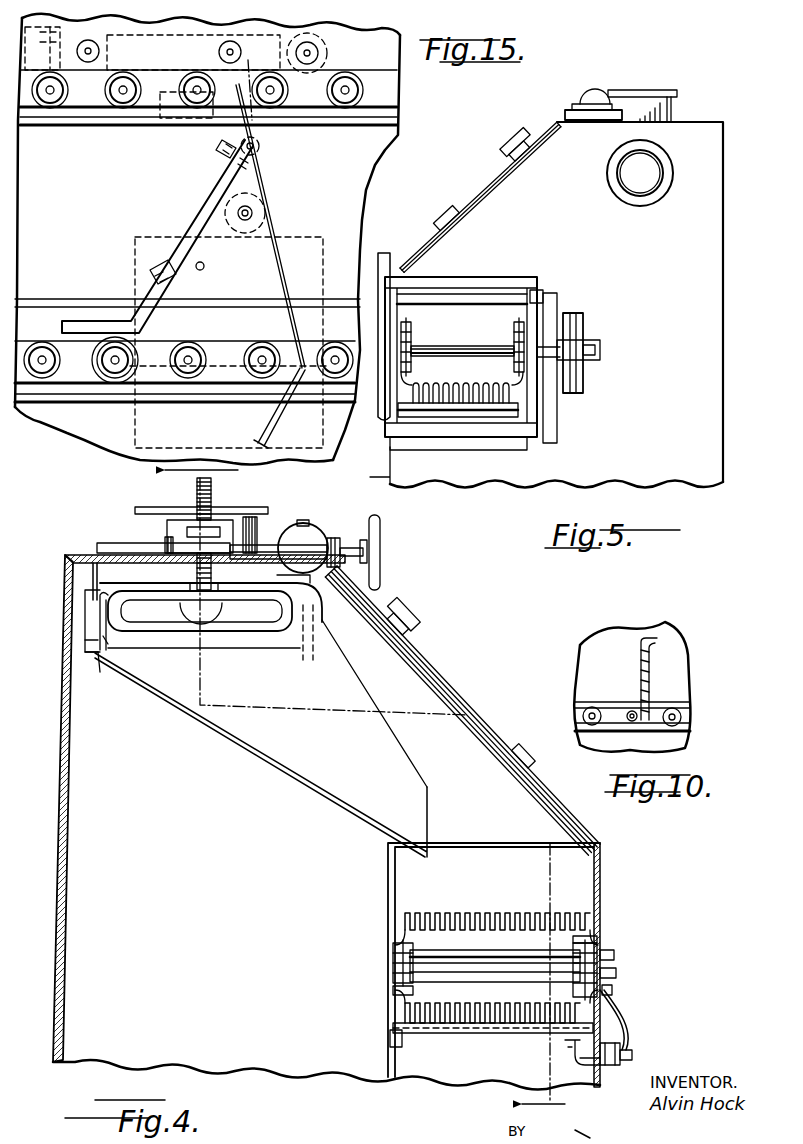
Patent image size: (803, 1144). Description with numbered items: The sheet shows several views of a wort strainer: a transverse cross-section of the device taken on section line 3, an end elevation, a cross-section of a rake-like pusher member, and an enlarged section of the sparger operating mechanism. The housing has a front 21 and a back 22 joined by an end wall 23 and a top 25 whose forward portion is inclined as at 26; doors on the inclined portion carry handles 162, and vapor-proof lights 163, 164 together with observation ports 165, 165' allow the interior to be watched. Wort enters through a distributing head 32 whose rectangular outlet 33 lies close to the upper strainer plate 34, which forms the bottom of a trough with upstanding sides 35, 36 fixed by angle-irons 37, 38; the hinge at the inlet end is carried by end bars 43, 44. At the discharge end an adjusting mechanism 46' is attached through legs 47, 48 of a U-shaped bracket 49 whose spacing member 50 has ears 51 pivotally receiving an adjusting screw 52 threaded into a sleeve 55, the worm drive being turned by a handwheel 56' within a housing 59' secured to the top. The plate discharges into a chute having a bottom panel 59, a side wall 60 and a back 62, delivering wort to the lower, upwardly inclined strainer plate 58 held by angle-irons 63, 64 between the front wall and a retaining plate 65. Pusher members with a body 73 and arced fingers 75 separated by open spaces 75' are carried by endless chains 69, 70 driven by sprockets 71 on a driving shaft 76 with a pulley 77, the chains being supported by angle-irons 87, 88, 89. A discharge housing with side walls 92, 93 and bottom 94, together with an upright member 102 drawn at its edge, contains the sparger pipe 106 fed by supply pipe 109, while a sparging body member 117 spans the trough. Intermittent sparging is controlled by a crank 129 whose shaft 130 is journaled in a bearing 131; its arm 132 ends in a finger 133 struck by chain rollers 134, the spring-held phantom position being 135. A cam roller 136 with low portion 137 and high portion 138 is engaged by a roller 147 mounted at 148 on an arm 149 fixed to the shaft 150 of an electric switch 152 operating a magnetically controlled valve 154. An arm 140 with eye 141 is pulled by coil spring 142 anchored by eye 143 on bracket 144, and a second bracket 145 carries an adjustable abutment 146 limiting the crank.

In FIG. 4, the section line 3- 3 is at (372, 789).
In FIG. 15, the front 21 is at (380, 172).
In FIG. 5, the front 21 is at (372, 465).
In FIG. 4, the front 21 is at (603, 873).
In FIG. 5, the back 22 is at (725, 283).
In FIG. 4, the back 22 is at (57, 812).
In FIG. 5, the end wall 23 is at (652, 266).
In FIG. 5, the top 25 is at (706, 122).
In FIG. 4, the top 25 is at (78, 557).
In FIG. 5, the inclined portion of the top 26 is at (485, 203).
In FIG. 4, the inclined portion of the top 26 is at (470, 695).
In FIG. 4, the distributing head or nozzle 32 is at (193, 578).
In FIG. 4, the rectangular outlet 33 is at (237, 622).
In FIG. 4, the strainer plate 34 is at (180, 649).
In FIG. 4, the side 35 is at (318, 626).
In FIG. 4, the side 36 is at (100, 620).
In FIG. 4, the angle-iron 37 is at (290, 660).
In FIG. 4, the angle-iron 38 is at (100, 657).
In FIG. 4, the end bar 43 is at (312, 584).
In FIG. 4, the end bar 44 is at (92, 572).
In FIG. 4, the adjusting mechanism 46' is at (296, 533).
In FIG. 4, the leg of U-shaped bracket 47 is at (322, 615).
In FIG. 4, the leg of U-shaped bracket 48 is at (85, 643).
In FIG. 4, the U-shaped bracket 49 is at (83, 592).
In FIG. 4, the base or spacing member 50 is at (237, 620).
In FIG. 4, the ears 51 is at (230, 584).
In FIG. 4, the adjusting screw 52 is at (197, 500).
In FIG. 4, the threaded sleeve 55 is at (210, 512).
In FIG. 4, the handwheel 56' is at (390, 552).
In FIG. 4, the strainer plate 58 is at (483, 1032).
In FIG. 4, the bottom panel 59 is at (261, 755).
In FIG. 4, the housing 59' is at (208, 533).
In FIG. 4, the side wall 60 is at (383, 740).
In FIG. 4, the back 62 is at (105, 642).
In FIG. 4, the angle-iron 63 is at (593, 1037).
In FIG. 4, the angle-iron 64 is at (392, 1038).
In FIG. 10, the retaining member or plate 65 is at (690, 675).
In FIG. 4, the retaining member or plate 65 is at (390, 903).
In FIG. 15, the endless chain 69 is at (402, 87).
In FIG. 5, the endless chain 69 is at (410, 328).
In FIG. 4, the endless chain 69 is at (595, 938).
In FIG. 5, the endless chain 70 is at (513, 330).
In FIG. 10, the endless chain 70 is at (688, 718).
In FIG. 4, the endless chain 70 is at (397, 993).
In FIG. 4, the driving sprocket 71 is at (390, 966).
In FIG. 10, the body portion 73 is at (640, 685).
In FIG. 10, the fingers 75 is at (632, 678).
In FIG. 4, the fingers 75 is at (497, 970).
In FIG. 4, the open space portion 75' is at (474, 971).
In FIG. 5, the driving shaft 76 is at (458, 350).
In FIG. 4, the driving shaft 76 is at (470, 967).
In FIG. 5, the pulley 77 is at (583, 328).
In FIG. 15, the supporting angle-iron 87 is at (398, 124).
In FIG. 15, the supporting angle-iron 88 is at (60, 405).
In FIG. 10, the supporting angle-iron 89 is at (693, 740).
In FIG. 5, the side wall 92 is at (388, 405).
In FIG. 5, the side wall 93 is at (542, 296).
In FIG. 5, the bottom 94 is at (467, 440).
In FIG. 5, the post 102 is at (388, 253).
In FIG. 5, the pipe 106 is at (480, 303).
In FIG. 5, the sparging fluid supply pipe 109 is at (558, 423).
In FIG. 4, the body member 117 is at (448, 1033).
In FIG. 15, the crank 129 is at (203, 210).
In FIG. 15, the shaft portion 130 is at (262, 147).
In FIG. 15, the bearing 131 is at (218, 145).
In FIG. 15, the arm 132 is at (195, 222).
In FIG. 15, the finger 133 is at (103, 318).
In FIG. 15, the roller 134 is at (115, 380).
In FIG. 15, the phantom line position 135 is at (275, 222).
In FIG. 15, the cam shaped roller 136 is at (283, 165).
In FIG. 4, the cam shaped roller 136 is at (616, 956).
In FIG. 15, the peripheral low portion 137 is at (222, 167).
In FIG. 15, the peripheral high portion 138 is at (280, 180).
In FIG. 15, the arm 140 is at (285, 89).
In FIG. 15, the eye 141 is at (318, 53).
In FIG. 15, the coil spring 142 is at (168, 65).
In FIG. 15, the eye 143 is at (88, 63).
In FIG. 15, the bracket 144 is at (32, 105).
In FIG. 15, the second bracket 145 is at (167, 88).
In FIG. 15, the adjustable abutment 146 is at (187, 132).
In FIG. 15, the roller 147 is at (225, 250).
In FIG. 15, the roller mounting 148 is at (265, 212).
In FIG. 15, the arm 149 is at (205, 270).
In FIG. 4, the arm 149 is at (618, 993).
In FIG. 15, the shaft 150 is at (155, 266).
In FIG. 15, the electric switch 152 is at (140, 283).
In FIG. 4, the electric switch 152 is at (610, 1002).
In FIG. 4, the magnetically controlled valve 154 is at (613, 1078).
In FIG. 5, the handles 162 is at (447, 205).
In FIG. 4, the handles 162 is at (438, 644).
In FIG. 5, the vapor-proof light 163 is at (580, 102).
In FIG. 4, the vapor-proof light 164 is at (315, 535).
In FIG. 5, the observation port 165 is at (511, 129).
In FIG. 4, the observation port 165' is at (438, 614).